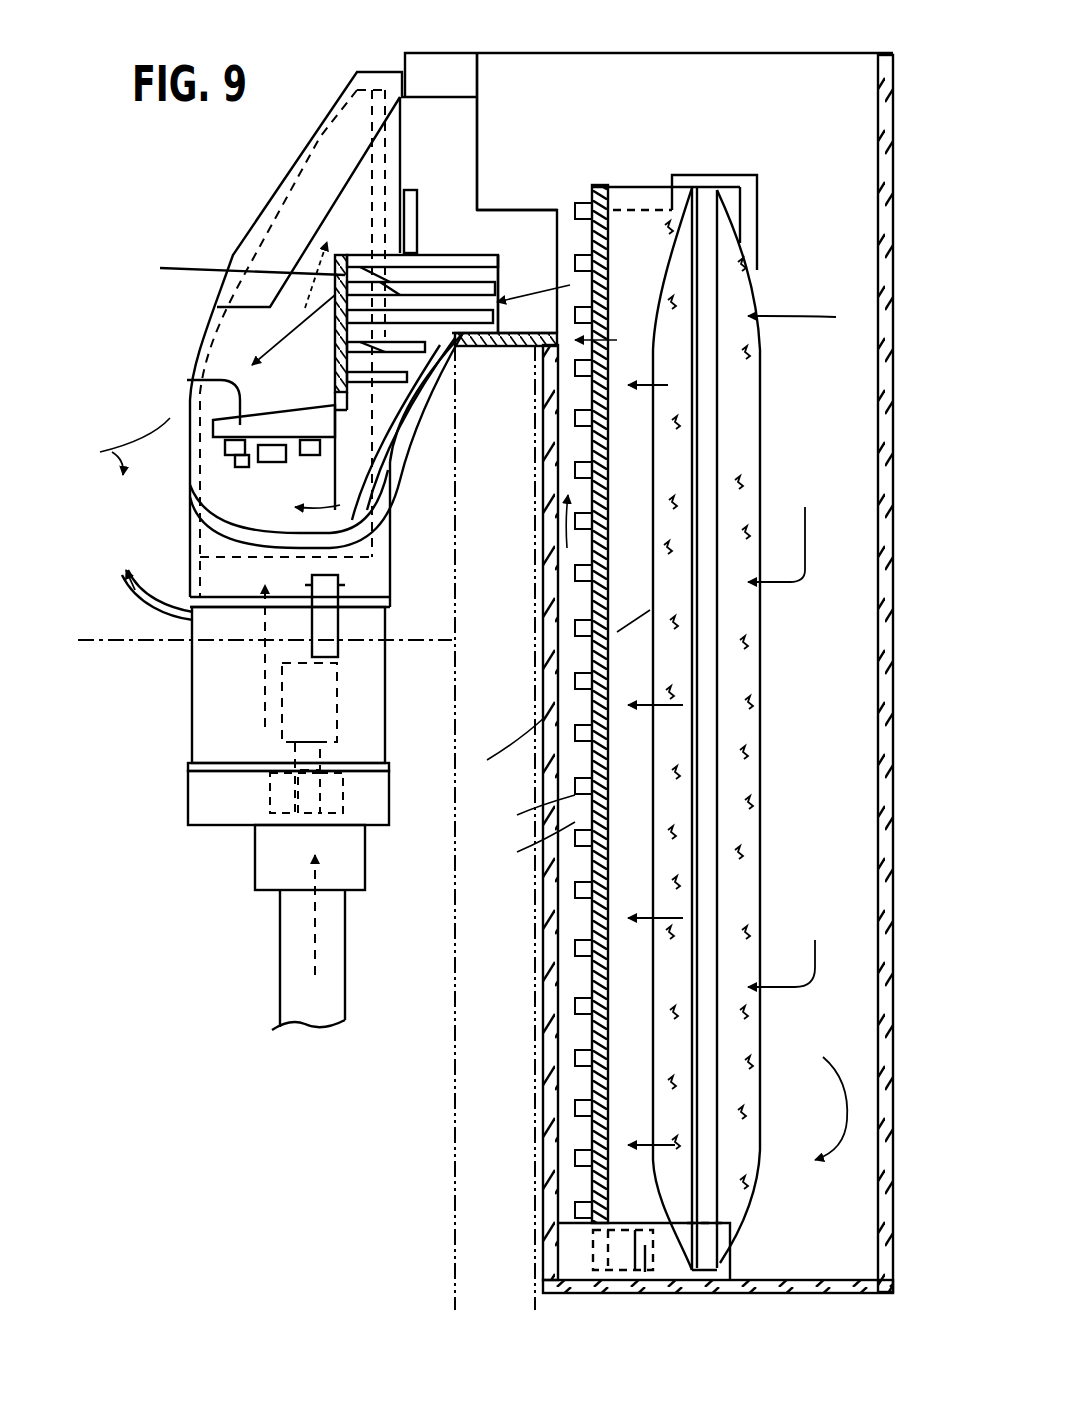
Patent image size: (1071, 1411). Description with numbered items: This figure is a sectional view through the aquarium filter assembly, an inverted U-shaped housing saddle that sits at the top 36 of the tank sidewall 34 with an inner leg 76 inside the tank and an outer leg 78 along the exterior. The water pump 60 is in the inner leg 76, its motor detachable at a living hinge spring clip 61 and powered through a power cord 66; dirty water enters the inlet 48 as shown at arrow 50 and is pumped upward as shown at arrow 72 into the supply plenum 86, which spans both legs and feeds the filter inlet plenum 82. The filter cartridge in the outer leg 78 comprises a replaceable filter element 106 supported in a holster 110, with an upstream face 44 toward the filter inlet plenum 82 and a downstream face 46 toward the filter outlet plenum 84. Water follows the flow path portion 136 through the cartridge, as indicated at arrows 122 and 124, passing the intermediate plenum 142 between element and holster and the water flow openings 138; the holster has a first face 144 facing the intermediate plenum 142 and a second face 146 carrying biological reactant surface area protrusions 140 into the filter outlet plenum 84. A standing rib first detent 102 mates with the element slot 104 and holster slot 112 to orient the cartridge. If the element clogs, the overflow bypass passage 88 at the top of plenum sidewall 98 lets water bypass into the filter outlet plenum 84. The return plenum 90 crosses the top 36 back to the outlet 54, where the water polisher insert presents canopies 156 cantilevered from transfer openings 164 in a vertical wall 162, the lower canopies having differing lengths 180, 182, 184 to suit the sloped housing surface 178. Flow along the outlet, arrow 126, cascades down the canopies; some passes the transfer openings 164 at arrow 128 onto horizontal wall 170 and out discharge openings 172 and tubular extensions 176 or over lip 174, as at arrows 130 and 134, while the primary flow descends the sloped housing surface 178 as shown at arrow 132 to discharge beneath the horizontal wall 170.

The sidewall 34 is at (452, 1130).
The top 36 is at (518, 358).
The upstream face 44 is at (760, 420).
The downstream face 46 is at (475, 355).
The inlet 48 is at (346, 985).
The arrow 50 is at (315, 938).
The outlet 54 is at (170, 523).
The water pump 60 is at (385, 720).
The living hinge spring clip 61 is at (338, 630).
The power cord 66 is at (132, 592).
The arrow 72 is at (312, 255).
The inner leg 76 is at (220, 828).
The outer leg 78 is at (788, 1295).
The filter inlet plenum 82 is at (835, 712).
The filter outlet plenum 84 is at (506, 746).
The supply plenum 86 is at (657, 90).
The overflow bypass passage 88 is at (533, 210).
The return plenum 90 is at (542, 269).
The plenum sidewall 98 is at (507, 227).
The first keyed detent 102 is at (728, 1265).
The second keyed detent 104 is at (722, 1240).
The replaceable filter element 106 is at (758, 372).
The holster 110 is at (603, 185).
The detent 112 is at (622, 1232).
The arrow 122 is at (820, 1050).
The arrow 124 is at (640, 908).
The arrow 126 is at (540, 288).
The arrow 128 is at (262, 352).
The arrow 130 is at (109, 446).
The arrow 132 is at (326, 440).
The arrow 134 is at (215, 500).
The flow path portion 136 is at (622, 285).
The water flow openings 138 is at (612, 238).
The biological reactant surface area protrusions 140 is at (560, 622).
The intermediate plenum 142 is at (620, 634).
The first face 144 is at (522, 850).
The second face 146 is at (521, 816).
The canopies 156 is at (478, 252).
The vertical wall 162 is at (345, 352).
The transfer openings 164 is at (223, 272).
The horizontal wall 170 is at (290, 415).
The discharge openings 172 is at (215, 378).
The overflow edge lip 174 is at (215, 438).
The short tubular extensions 176 is at (250, 462).
The sloped housing surface 178 is at (395, 500).
The canopy cantilever length 180 is at (420, 375).
The canopy cantilever length 182 is at (400, 410).
The canopy cantilever length 184 is at (398, 450).